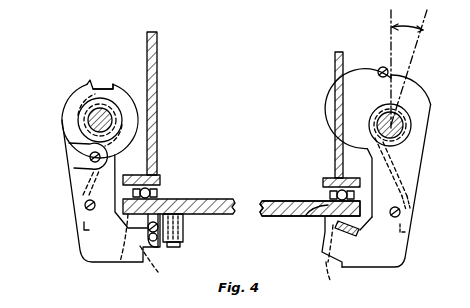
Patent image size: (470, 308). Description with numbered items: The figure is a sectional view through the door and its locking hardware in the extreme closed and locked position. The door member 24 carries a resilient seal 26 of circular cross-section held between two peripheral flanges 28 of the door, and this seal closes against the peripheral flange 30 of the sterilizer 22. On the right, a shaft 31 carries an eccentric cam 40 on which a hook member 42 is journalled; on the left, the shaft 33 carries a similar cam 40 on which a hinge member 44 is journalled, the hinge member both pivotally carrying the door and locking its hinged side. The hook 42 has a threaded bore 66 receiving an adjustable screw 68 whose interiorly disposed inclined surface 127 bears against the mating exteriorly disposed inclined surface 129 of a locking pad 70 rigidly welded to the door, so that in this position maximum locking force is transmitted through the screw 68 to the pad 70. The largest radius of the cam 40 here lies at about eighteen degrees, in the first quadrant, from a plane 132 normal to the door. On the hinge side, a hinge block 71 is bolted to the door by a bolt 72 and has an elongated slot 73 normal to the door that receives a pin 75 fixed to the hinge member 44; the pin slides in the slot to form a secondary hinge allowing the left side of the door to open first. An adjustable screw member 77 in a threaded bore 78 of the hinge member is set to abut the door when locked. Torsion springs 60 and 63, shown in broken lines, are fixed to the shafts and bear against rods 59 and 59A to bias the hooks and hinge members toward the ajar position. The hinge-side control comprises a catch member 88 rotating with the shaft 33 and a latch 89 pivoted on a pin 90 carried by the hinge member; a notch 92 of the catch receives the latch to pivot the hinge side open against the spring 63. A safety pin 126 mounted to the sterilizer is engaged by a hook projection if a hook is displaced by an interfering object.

The sterilizer 22 is at (335, 75).
The door member 24 is at (303, 203).
The resilient seal 26 is at (152, 181).
The peripheral flanges 28 is at (132, 192).
The peripheral flange 30 is at (349, 178).
The shaft 31 is at (402, 128).
The shaft 33 is at (98, 120).
The eccentric cam 40 is at (403, 112).
The hook member 42 is at (420, 138).
The hinge member 44 is at (88, 258).
The rod 59 is at (401, 212).
The rod 59A is at (83, 226).
The torsion spring 60 is at (397, 175).
The torsion spring 63 is at (80, 186).
The threaded bore 66 is at (328, 268).
The adjustable threaded screw 68 is at (324, 258).
The locking pad 70 is at (366, 225).
The hinge block 71 is at (184, 225).
The bolt 72 is at (181, 247).
The elongated slot 73 is at (160, 242).
The pin 75 is at (149, 256).
The adjustable screw member 77 is at (140, 276).
The threaded bore 78 is at (118, 264).
The catch member 88 is at (78, 96).
The latch 89 is at (70, 145).
The pin 90 is at (91, 160).
The notch 92 is at (112, 96).
The pin 126 is at (378, 73).
The inclined surface 127 is at (314, 216).
The inclined surface 129 is at (352, 236).
The plane 132 is at (390, 45).